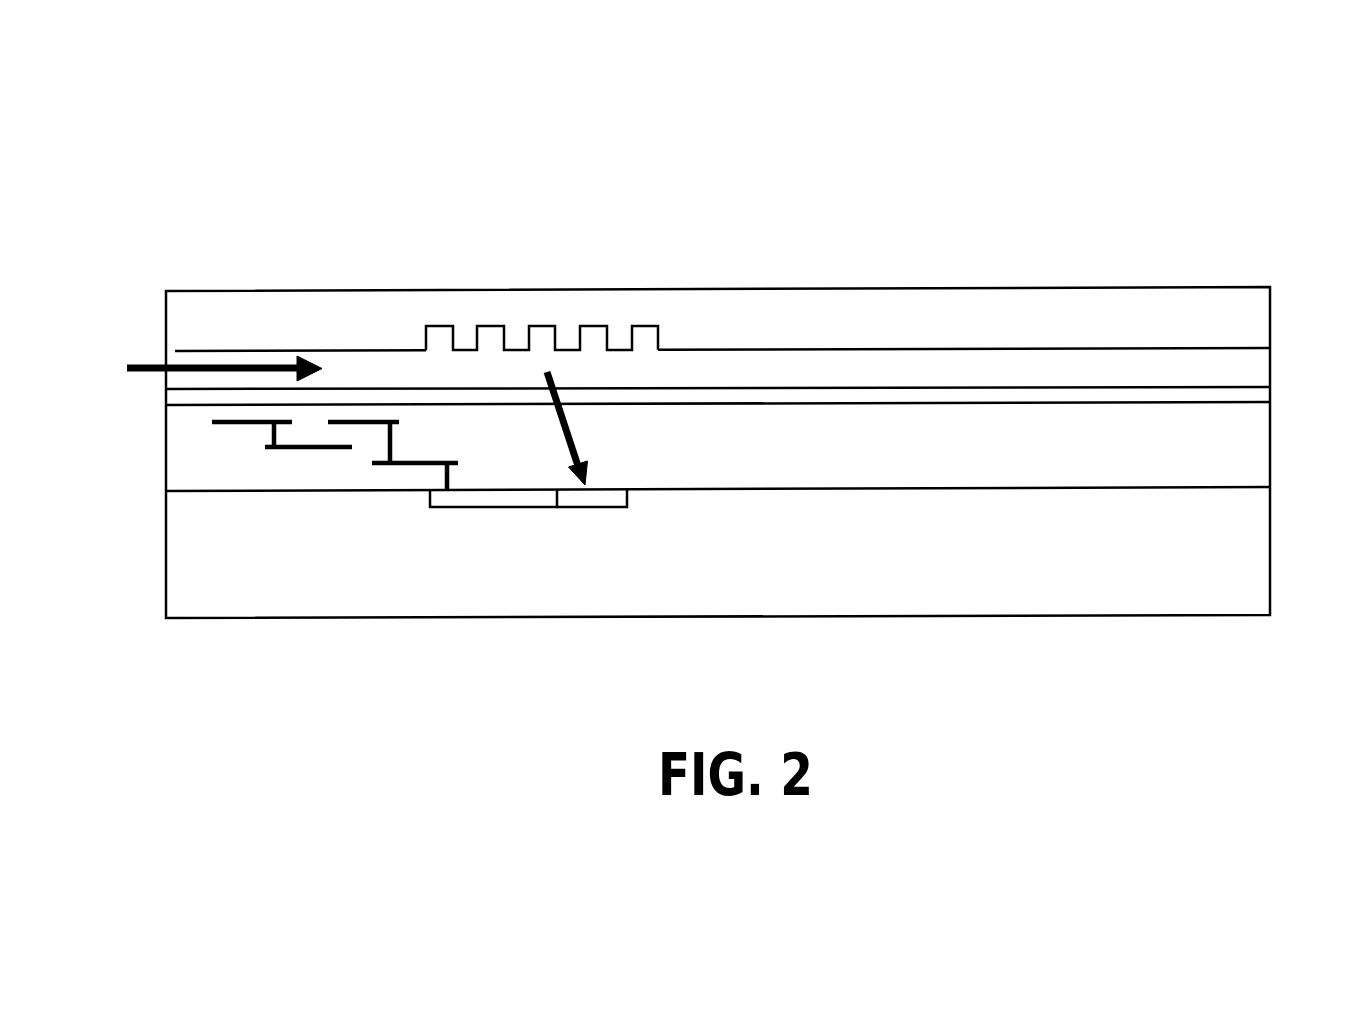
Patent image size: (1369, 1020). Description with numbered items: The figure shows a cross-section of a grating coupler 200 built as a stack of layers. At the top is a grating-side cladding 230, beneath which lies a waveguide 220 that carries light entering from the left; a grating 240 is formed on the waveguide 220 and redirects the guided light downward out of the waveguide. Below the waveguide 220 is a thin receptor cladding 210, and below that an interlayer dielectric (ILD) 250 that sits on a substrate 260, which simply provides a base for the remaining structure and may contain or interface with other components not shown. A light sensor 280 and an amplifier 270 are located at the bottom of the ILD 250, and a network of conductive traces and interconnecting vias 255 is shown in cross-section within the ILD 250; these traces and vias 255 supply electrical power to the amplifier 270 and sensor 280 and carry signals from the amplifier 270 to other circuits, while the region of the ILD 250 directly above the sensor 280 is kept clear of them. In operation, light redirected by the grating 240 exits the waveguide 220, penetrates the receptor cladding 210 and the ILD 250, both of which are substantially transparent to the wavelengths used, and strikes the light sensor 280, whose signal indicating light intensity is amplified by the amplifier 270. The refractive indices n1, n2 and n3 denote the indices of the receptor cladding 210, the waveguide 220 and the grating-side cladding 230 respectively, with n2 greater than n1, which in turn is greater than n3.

The grating coupler 200 is at (237, 138).
The receptor cladding 210 is at (168, 390).
The waveguide 220 is at (782, 368).
The grating-side cladding 230 is at (980, 308).
The grating 240 is at (540, 326).
The interlayer dielectric (ILD) 250 is at (202, 463).
The conductive traces and interconnecting vias 255 is at (302, 448).
The substrate 260 is at (303, 592).
The amplifier 270 is at (483, 508).
The light sensor 280 is at (600, 507).
The refractive index of the receptor cladding n1 is at (1270, 395).
The refractive index of the waveguide n2 is at (1270, 368).
The refractive index of the grating-side cladding n3 is at (1270, 322).